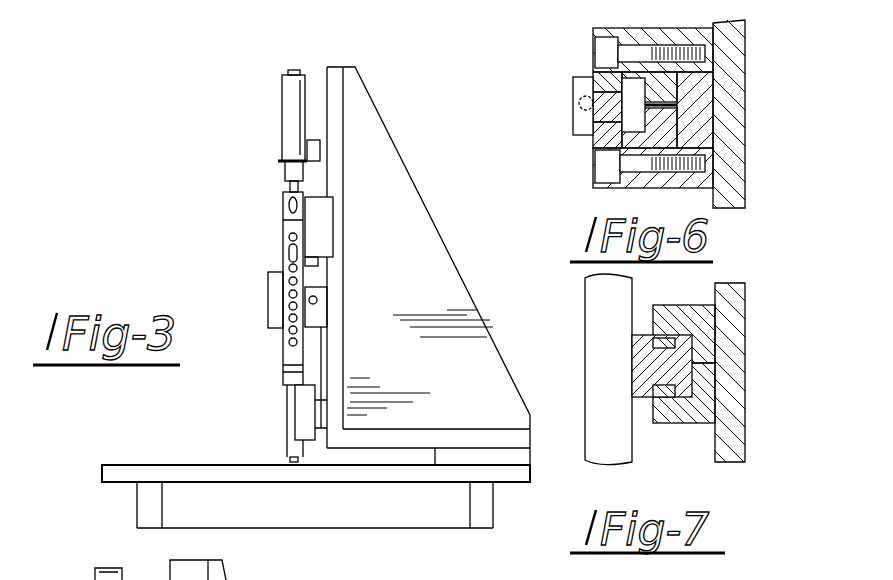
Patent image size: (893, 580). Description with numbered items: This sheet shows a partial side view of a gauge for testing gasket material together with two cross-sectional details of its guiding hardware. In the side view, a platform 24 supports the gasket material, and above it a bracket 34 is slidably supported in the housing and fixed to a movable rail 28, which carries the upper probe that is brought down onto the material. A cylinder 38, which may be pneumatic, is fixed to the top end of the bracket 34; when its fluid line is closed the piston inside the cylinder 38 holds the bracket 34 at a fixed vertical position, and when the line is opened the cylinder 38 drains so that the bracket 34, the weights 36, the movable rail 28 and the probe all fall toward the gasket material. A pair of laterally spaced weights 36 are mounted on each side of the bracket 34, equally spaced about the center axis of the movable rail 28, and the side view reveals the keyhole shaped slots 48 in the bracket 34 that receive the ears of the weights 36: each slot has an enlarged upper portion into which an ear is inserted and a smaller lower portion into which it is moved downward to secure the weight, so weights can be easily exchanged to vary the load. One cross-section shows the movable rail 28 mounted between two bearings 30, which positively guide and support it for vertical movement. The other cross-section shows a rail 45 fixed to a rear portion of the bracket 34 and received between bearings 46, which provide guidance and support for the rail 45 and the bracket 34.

In FIG. 3, the platform 24 is at (133, 467).
In FIG. 6, the movable rail 28 is at (573, 100).
In FIG. 6, the bearing 30 is at (593, 38).
In FIG. 3, the bracket 34 is at (287, 228).
In FIG. 7, the bracket 34 is at (595, 320).
In FIG. 3, the weight 36 is at (288, 447).
In FIG. 3, the cylinder 38 is at (292, 118).
In FIG. 7, the rail 45 is at (605, 333).
In FIG. 7, the bearing 46 is at (695, 312).
In FIG. 3, the keyhole shaped slot 48 is at (285, 250).